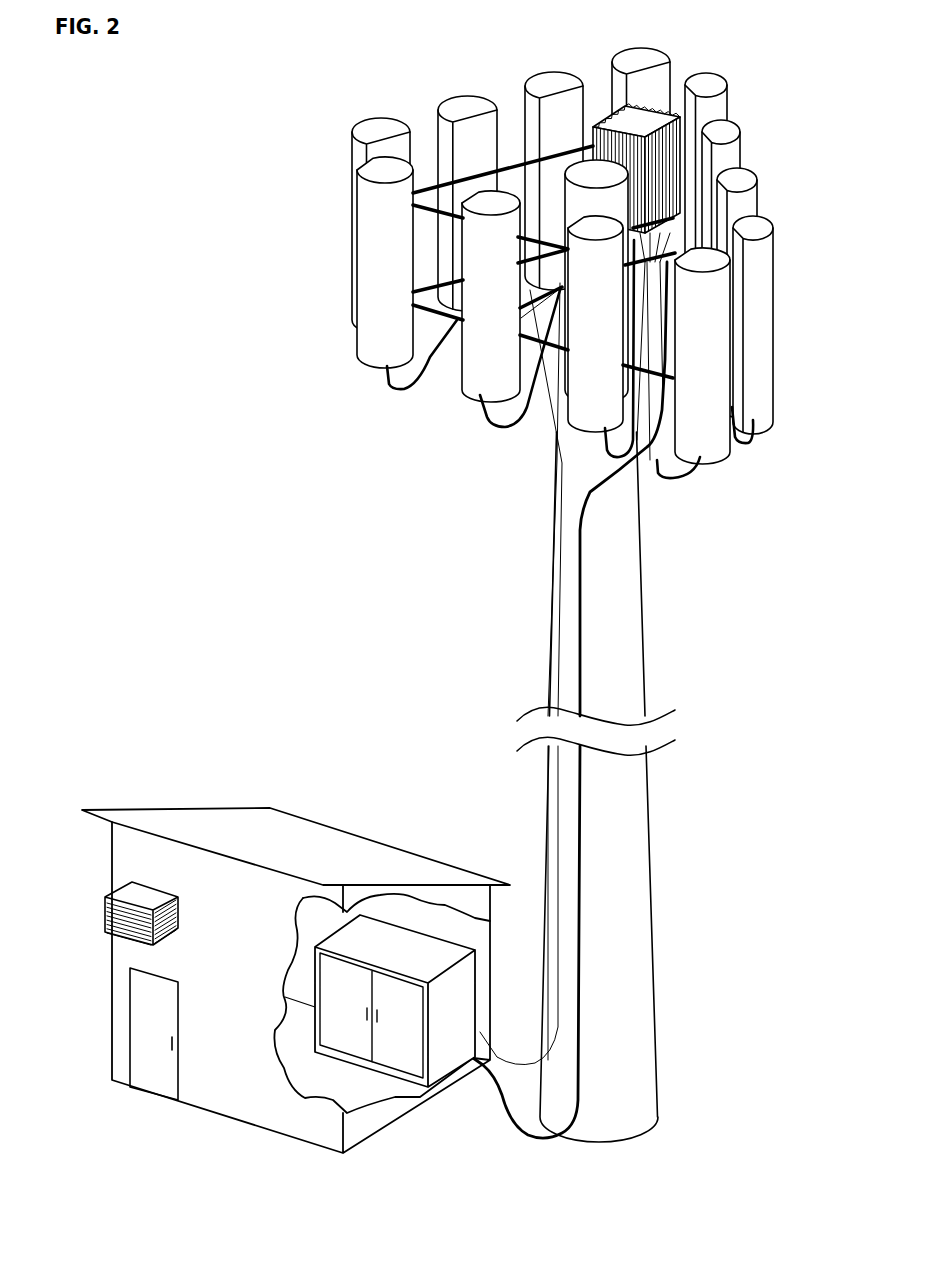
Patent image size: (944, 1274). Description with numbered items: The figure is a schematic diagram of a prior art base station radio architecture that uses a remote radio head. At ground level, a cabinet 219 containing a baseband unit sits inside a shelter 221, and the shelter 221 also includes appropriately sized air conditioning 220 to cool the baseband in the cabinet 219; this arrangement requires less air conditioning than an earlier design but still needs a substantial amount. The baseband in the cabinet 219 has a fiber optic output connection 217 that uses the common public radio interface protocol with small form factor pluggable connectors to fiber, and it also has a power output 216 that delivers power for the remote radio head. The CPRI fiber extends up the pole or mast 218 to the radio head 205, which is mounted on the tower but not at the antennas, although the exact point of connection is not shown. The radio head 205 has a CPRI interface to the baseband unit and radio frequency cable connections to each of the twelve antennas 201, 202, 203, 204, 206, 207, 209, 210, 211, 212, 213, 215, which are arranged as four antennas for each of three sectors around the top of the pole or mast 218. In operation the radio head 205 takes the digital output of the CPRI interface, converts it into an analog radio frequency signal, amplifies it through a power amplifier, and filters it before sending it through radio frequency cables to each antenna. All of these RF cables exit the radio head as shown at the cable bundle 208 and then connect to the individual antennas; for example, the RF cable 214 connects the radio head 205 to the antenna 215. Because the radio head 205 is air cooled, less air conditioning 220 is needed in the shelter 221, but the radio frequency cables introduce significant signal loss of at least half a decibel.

The antenna 201 is at (388, 118).
The antenna 202 is at (473, 96).
The antenna 203 is at (560, 70).
The antenna 204 is at (652, 45).
The radio head 205 is at (650, 120).
The antenna 206 is at (723, 78).
The antenna 207 is at (735, 123).
The cable bundle 208 is at (678, 258).
The antenna 209 is at (757, 182).
The antenna 210 is at (768, 220).
The antenna 211 is at (722, 460).
The antenna 212 is at (570, 428).
The antenna 213 is at (473, 402).
The RF cable 214 is at (397, 395).
The antenna 215 is at (358, 363).
The power output 216 is at (583, 627).
The fiber optic output connection 217 is at (562, 693).
The pole or mast 218 is at (647, 700).
The cabinet 219 is at (437, 948).
The air conditioning 220 is at (105, 927).
The shelter 221 is at (112, 848).